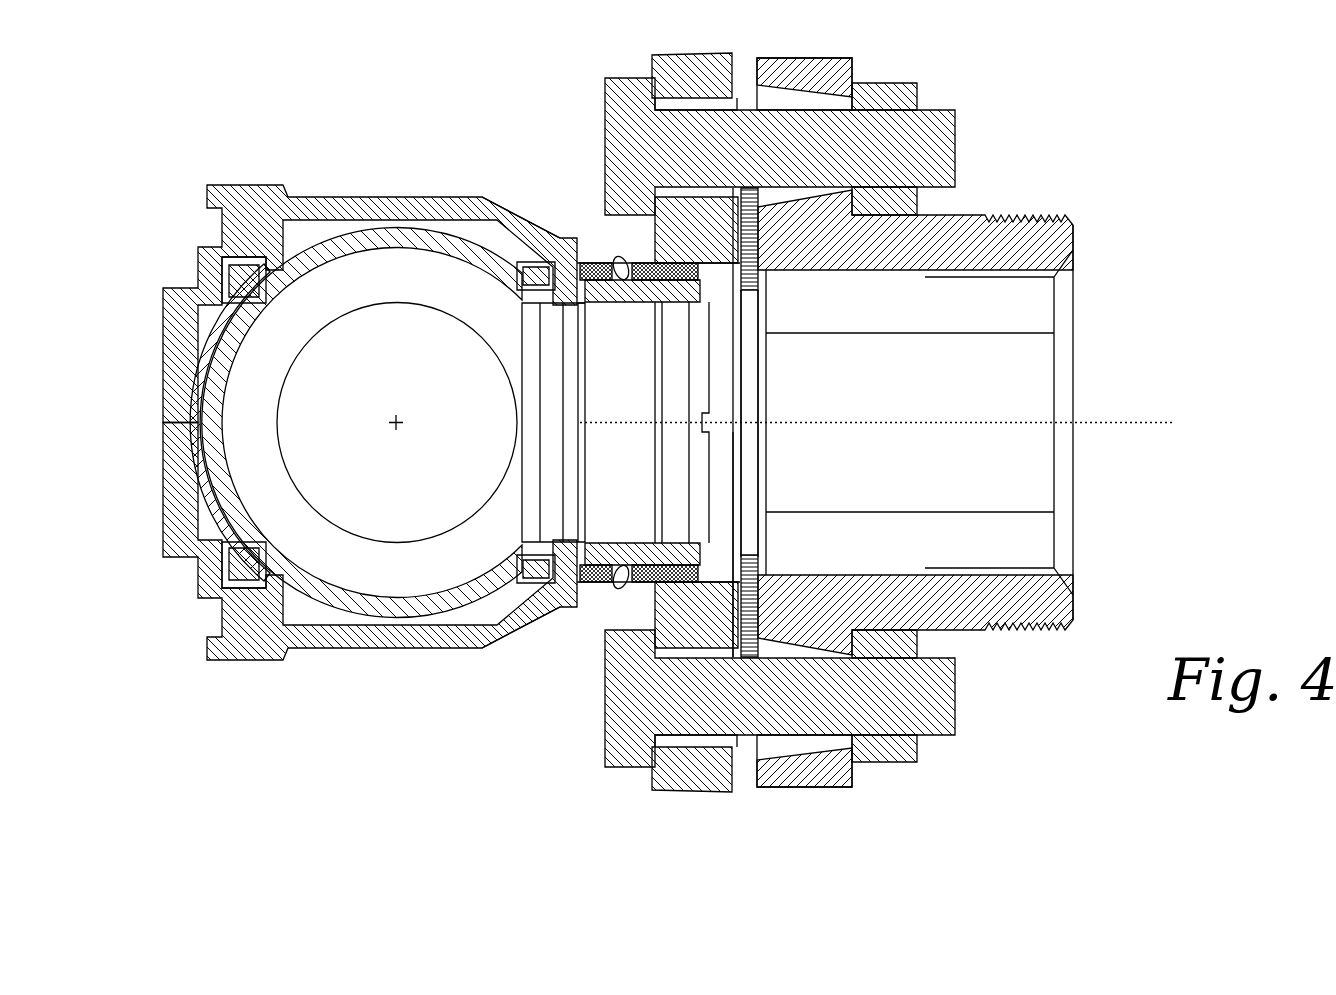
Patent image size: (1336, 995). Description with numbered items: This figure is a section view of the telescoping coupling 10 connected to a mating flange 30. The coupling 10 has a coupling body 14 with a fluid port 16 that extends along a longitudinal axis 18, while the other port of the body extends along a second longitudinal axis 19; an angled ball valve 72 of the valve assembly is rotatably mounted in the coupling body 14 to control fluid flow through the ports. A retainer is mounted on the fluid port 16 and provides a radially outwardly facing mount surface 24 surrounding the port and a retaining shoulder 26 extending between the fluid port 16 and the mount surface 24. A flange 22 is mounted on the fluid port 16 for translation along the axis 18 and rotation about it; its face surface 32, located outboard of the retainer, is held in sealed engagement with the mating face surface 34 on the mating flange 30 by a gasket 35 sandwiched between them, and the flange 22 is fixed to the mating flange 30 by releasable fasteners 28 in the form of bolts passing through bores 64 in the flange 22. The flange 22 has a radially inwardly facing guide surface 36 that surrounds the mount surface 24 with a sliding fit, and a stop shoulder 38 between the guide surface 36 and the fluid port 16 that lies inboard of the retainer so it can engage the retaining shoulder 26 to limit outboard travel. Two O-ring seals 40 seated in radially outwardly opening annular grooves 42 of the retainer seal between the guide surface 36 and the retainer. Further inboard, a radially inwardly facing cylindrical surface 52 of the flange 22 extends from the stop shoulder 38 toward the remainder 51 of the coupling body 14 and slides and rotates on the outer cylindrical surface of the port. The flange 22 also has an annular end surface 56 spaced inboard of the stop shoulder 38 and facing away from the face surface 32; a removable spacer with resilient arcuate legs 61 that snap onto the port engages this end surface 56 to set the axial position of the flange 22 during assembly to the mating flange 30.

The telescoping coupling 10 is at (508, 92).
The coupling body 14 is at (228, 178).
The fluid port 16 is at (588, 318).
The longitudinal axis 18 is at (1138, 420).
The longitudinal axis 19 is at (393, 425).
The flange 22 is at (690, 98).
The mount surface 24 is at (656, 262).
The retaining shoulder 26 is at (626, 565).
The releasable fasteners 28 is at (950, 108).
The mating flange 30 is at (818, 58).
The face surface 32 is at (755, 400).
The mating face surface 34 is at (752, 355).
The gasket 35 is at (755, 303).
The guide surface 36 is at (735, 575).
The stop shoulder 38 is at (650, 302).
The O-ring seals 40 is at (660, 582).
The annular grooves 42 is at (700, 545).
The remainder of the coupling body 51 is at (490, 196).
The radially inwardly facing cylindrical surface 52 is at (618, 302).
The annular end surface 56 is at (600, 262).
The arcuate legs 61 is at (556, 262).
The through holes or bores 64 is at (743, 100).
The angled ball valve 72 is at (312, 600).